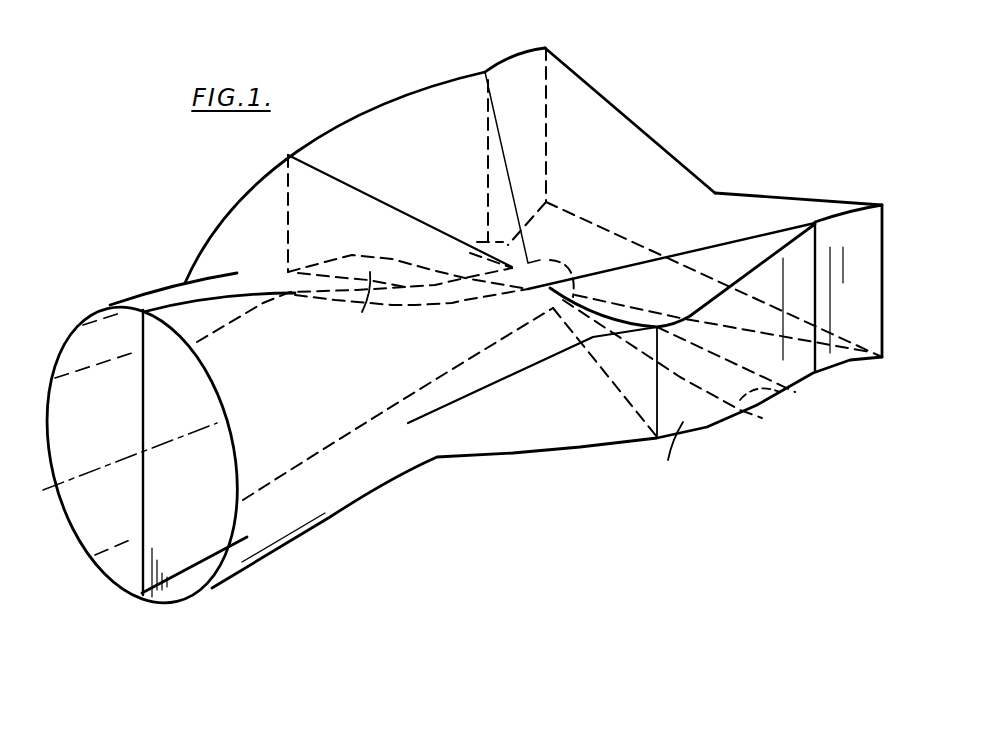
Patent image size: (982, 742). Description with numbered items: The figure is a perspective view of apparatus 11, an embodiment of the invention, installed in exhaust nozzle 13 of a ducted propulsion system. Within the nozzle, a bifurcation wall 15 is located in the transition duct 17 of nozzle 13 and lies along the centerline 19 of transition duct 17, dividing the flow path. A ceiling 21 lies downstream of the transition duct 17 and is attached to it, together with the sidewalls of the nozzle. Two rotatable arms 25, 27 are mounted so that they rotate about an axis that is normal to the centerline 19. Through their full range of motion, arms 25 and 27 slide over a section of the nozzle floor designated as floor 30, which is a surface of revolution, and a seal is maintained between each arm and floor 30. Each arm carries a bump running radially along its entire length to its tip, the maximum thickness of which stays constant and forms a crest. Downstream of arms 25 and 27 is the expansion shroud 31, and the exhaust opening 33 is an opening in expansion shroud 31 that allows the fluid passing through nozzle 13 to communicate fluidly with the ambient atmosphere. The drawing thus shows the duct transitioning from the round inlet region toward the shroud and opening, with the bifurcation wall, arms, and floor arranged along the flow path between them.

The apparatus 11 is at (695, 441).
The exhaust nozzle 13 is at (152, 270).
The bifurcation wall 15 is at (141, 396).
The transition duct 17 is at (212, 588).
The centerline 19 is at (55, 492).
The ceiling 21 is at (396, 96).
The arm 25 is at (390, 245).
The arm 27 is at (758, 414).
The floor 30 is at (362, 313).
The expansion shroud 31 is at (519, 58).
The exhaust opening 33 is at (622, 110).